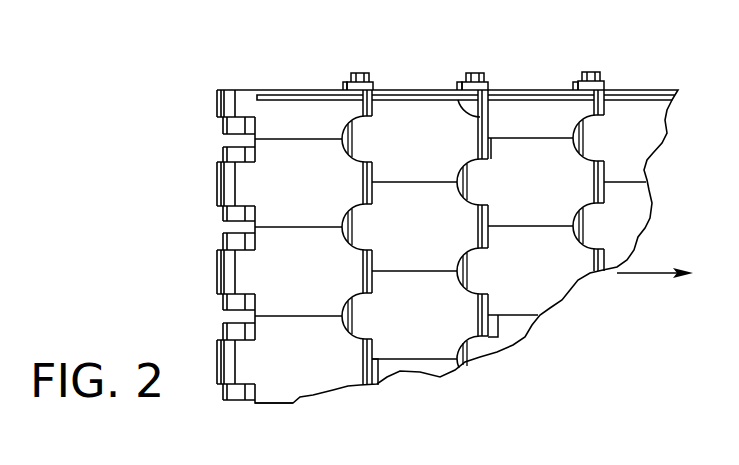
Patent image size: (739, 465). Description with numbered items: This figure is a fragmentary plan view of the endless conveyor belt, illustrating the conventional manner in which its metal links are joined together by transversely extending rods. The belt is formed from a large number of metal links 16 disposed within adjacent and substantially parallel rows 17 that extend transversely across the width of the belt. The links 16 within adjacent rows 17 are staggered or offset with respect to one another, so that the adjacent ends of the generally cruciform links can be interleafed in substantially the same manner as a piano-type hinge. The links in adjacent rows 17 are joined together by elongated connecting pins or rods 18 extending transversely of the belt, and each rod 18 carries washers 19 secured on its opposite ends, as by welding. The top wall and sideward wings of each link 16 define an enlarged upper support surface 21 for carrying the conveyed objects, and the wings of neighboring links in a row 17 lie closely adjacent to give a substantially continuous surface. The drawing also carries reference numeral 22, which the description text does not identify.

The metal link 16 is at (262, 270).
The row 17 is at (347, 393).
The connecting rod 18 is at (360, 72).
The washer 19 is at (346, 82).
The upper support surface 21 is at (443, 229).
The wear strip 22 is at (538, 92).